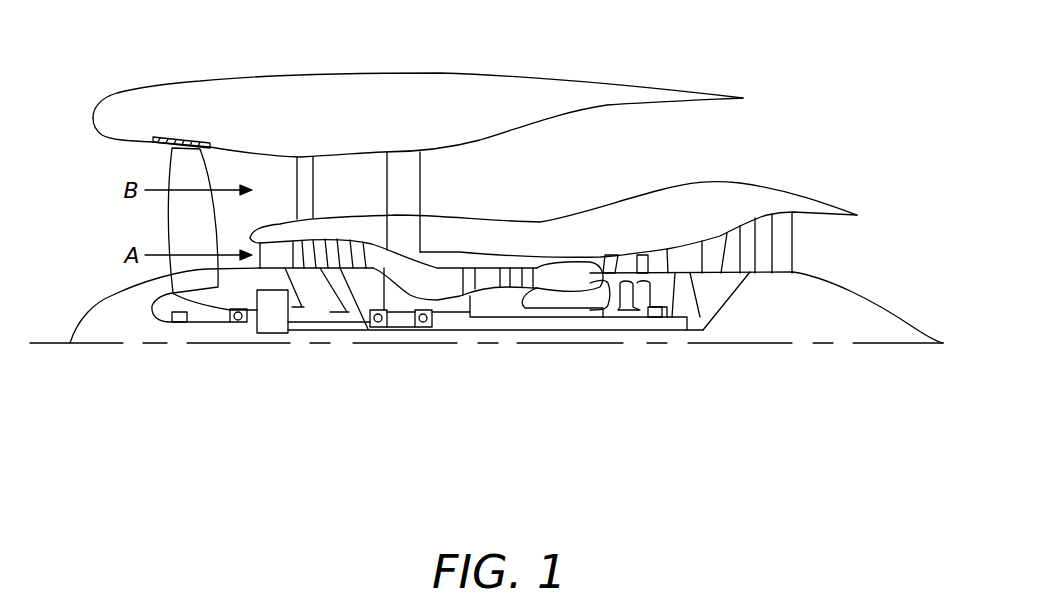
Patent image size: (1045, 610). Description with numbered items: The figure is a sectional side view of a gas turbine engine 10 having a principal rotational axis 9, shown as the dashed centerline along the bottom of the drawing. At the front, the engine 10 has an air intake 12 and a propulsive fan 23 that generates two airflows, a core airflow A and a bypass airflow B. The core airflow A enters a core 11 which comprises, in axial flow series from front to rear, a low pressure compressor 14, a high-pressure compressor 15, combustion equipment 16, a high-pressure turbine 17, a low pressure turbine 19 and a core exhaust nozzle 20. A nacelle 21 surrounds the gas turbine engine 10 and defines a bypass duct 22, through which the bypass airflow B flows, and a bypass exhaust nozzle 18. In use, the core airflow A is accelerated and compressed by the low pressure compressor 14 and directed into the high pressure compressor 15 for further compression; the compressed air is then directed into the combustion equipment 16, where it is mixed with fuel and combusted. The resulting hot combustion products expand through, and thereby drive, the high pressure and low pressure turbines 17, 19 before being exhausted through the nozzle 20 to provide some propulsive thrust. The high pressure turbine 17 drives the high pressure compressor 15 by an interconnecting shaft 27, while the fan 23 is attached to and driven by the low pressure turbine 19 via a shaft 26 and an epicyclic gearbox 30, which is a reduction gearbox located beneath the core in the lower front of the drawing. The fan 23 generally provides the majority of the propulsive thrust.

The principal rotational axis 9 is at (647, 345).
The gas turbine engine 10 is at (160, 86).
The core 11 is at (538, 228).
The air intake 12 is at (117, 167).
The low pressure compressor 14 is at (347, 245).
The high pressure compressor 15 is at (487, 280).
The combustion equipment 16 is at (565, 278).
The high-pressure turbine 17 is at (627, 262).
The bypass exhaust nozzle 18 is at (748, 141).
The low pressure turbine 19 is at (763, 233).
The core exhaust nozzle 20 is at (834, 243).
The nacelle 21 is at (400, 85).
The bypass duct 22 is at (665, 155).
The propulsive fan 23 is at (172, 222).
The shaft 26 is at (483, 331).
The interconnecting shaft 27 is at (521, 331).
The epicyclic gearbox 30 is at (270, 322).